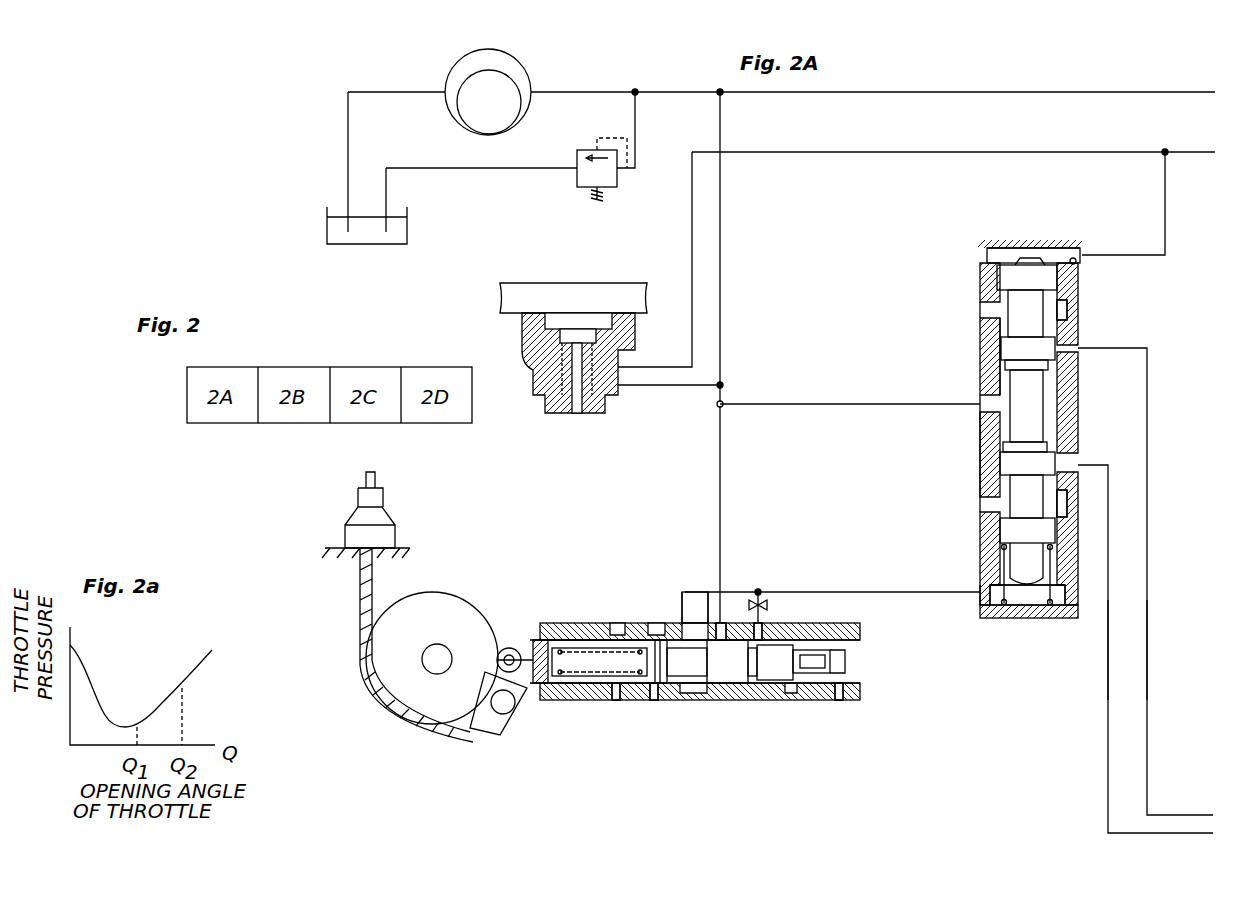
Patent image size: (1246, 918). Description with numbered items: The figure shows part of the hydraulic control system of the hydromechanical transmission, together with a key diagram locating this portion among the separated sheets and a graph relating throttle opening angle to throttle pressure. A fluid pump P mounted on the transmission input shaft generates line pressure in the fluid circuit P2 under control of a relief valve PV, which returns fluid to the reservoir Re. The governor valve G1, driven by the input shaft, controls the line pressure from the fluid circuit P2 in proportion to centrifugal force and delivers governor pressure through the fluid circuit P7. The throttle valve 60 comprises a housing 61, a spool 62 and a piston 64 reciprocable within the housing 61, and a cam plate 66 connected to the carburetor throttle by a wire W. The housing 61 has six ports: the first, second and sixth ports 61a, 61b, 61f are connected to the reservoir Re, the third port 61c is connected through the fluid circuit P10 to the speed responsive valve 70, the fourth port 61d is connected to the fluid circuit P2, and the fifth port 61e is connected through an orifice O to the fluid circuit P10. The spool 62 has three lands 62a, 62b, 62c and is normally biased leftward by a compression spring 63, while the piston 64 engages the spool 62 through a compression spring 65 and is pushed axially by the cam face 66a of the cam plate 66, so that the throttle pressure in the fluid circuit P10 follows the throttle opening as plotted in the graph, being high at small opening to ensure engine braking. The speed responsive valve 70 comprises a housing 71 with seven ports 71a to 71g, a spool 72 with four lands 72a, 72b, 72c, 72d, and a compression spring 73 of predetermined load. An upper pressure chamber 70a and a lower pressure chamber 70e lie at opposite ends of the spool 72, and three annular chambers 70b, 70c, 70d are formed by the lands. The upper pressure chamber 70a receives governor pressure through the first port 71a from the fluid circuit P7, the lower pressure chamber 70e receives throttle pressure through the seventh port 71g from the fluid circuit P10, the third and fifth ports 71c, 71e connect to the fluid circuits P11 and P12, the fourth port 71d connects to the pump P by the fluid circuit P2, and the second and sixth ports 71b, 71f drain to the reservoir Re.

The fluid pump P is at (524, 80).
The relief valve PV is at (614, 183).
The reservoir Re is at (375, 245).
The fluid circuit P2 is at (935, 92).
The fluid circuit P7 is at (795, 152).
The governor valve G1 is at (533, 372).
The speed responsive valve 70 is at (972, 447).
The upper pressure chamber 70a is at (1037, 255).
The annular chamber 70b is at (1062, 310).
The annular chamber 70c is at (1000, 388).
The annular chamber 70d is at (1050, 503).
The lower pressure chamber 70e is at (1058, 600).
The housing 71 is at (988, 430).
The first port 71a is at (1076, 263).
The second port 71b is at (983, 316).
The third port 71c is at (1066, 351).
The fourth port 71d is at (985, 406).
The fifth port 71e is at (1068, 462).
The sixth port 71f is at (985, 506).
The seventh port 71g is at (980, 600).
The spool 72 is at (1030, 405).
The land 72a is at (1000, 283).
The land 72b is at (1040, 348).
The land 72c is at (1010, 460).
The land 72d is at (1005, 533).
The compression spring 73 is at (1000, 603).
The fluid circuit P10 is at (890, 592).
The fluid circuit P11 is at (1147, 675).
The fluid circuit P12 is at (1108, 663).
The throttle valve 60 is at (611, 600).
The housing 61 is at (775, 690).
The first port 61a is at (612, 700).
The second port 61b is at (656, 700).
The third port 61c is at (683, 620).
The fourth port 61d is at (740, 607).
The fifth port 61e is at (760, 625).
The sixth port 61f is at (842, 697).
The spool 62 is at (808, 650).
The land 62a is at (648, 640).
The land 62b is at (735, 680).
The land 62c is at (773, 680).
The compression spring 63 is at (848, 655).
The piston 64 is at (537, 628).
The compression spring 65 is at (565, 645).
The cam plate 66 is at (455, 605).
The cam face 66a is at (485, 603).
The wire W is at (358, 595).
The orifice O is at (763, 600).